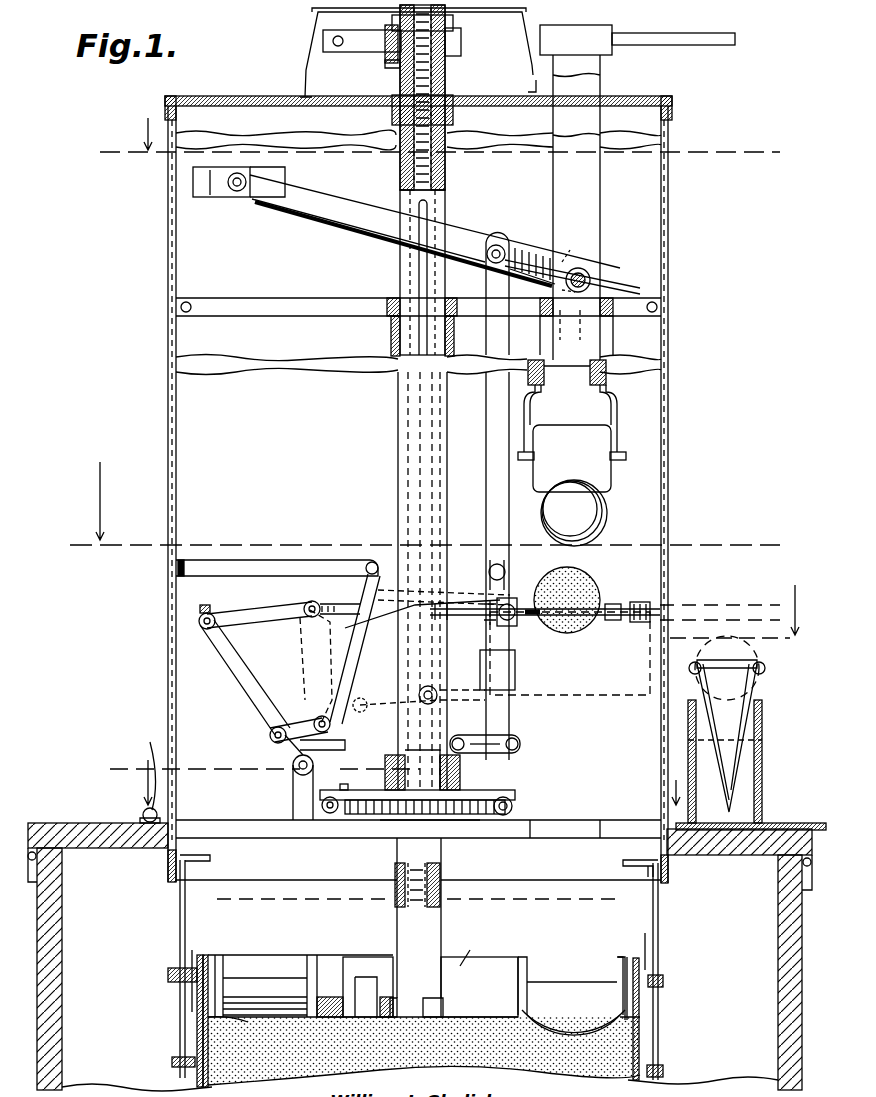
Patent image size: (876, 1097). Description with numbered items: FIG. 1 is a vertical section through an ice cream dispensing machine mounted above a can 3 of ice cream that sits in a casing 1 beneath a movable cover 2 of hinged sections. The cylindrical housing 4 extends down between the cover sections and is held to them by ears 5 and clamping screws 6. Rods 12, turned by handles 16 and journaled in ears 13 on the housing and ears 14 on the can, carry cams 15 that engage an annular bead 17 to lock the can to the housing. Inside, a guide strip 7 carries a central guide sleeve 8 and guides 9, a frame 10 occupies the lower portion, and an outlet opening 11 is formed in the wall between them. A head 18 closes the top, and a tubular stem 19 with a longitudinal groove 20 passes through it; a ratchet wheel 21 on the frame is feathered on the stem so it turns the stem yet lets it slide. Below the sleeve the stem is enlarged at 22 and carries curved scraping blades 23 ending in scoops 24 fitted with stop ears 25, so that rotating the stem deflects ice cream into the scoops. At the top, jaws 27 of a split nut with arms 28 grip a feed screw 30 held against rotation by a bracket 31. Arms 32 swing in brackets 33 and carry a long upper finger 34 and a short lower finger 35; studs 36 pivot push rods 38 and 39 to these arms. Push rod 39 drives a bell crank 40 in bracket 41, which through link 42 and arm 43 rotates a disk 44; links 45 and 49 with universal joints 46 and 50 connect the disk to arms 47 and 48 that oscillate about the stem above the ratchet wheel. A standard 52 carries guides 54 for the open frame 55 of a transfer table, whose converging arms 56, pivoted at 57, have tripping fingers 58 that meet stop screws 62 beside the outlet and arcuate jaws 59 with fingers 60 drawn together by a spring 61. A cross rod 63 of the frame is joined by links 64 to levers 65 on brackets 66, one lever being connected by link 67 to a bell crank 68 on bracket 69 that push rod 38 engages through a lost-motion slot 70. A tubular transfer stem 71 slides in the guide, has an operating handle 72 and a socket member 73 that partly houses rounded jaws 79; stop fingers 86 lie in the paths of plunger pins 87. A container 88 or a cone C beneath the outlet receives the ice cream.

The casing 1 is at (62, 1010).
The movable cover 2 is at (794, 842).
The can 3 is at (158, 1032).
The housing 4 is at (688, 366).
The ears 5 is at (392, 791).
The clamping screws 6 is at (147, 766).
The guide strip 7 is at (278, 300).
The guide sleeve 8 is at (398, 437).
The guides 9 is at (540, 352).
The frame 10 is at (240, 846).
The outlet opening 11 is at (680, 588).
The rods 12 is at (180, 932).
The ears 13 is at (192, 888).
The ears 14 is at (172, 1064).
The cam 15 is at (168, 975).
The handle 16 is at (210, 861).
The annular bead 17 is at (420, 964).
The head 18 is at (215, 100).
The tubular stem 19 is at (400, 272).
The longitudinal groove 20 is at (430, 205).
The ratchet wheel 21 is at (370, 814).
The enlarged portion 22 is at (430, 918).
The scraping blades 23 is at (345, 990).
The scoop 24 is at (270, 970).
The stop ears 25 is at (235, 940).
The jaws 27 is at (445, 42).
The arms 28 is at (356, 45).
The feed screw 30 is at (430, 86).
The bracket 31 is at (304, 76).
The arms 32 is at (322, 205).
The brackets 33 is at (222, 202).
The upper finger 34 is at (625, 270).
The lower finger 35 is at (540, 292).
The studs 36 is at (505, 228).
The push rod 38 is at (490, 412).
The push rod 39 is at (502, 705).
The bell crank 40 is at (455, 730).
The bracket 41 is at (470, 752).
The link 42 is at (445, 680).
The arm 43 is at (400, 712).
The disk 44 is at (390, 745).
The link 45 is at (585, 268).
The universal joints 46 is at (515, 806).
The arm 47 is at (515, 792).
The arm 48 is at (358, 775).
The link 49 is at (330, 815).
The universal joints 50 is at (340, 820).
The standard 52 is at (500, 680).
The guides 54 is at (348, 664).
The open frame 55 is at (326, 612).
The converging arms 56 is at (515, 600).
The pivot 57 is at (508, 626).
The tripping fingers 58 is at (555, 628).
The arcuate jaws 59 is at (600, 588).
The fingers 60 is at (613, 622).
The spring 61 is at (618, 605).
The stop screws 62 is at (636, 624).
The cross rod 63 is at (330, 748).
The links 64 is at (242, 614).
The levers 65 is at (232, 672).
The brackets 66 is at (293, 772).
The link 67 is at (265, 738).
The bell crank 68 is at (462, 580).
The bracket 69 is at (195, 565).
The slot 70 is at (520, 570).
The tubular elevating or transfer stem 71 is at (600, 68).
The operating handle 72 is at (672, 45).
The socket member 73 is at (600, 470).
The rounded jaws 79 is at (605, 520).
The stop fingers 86 is at (524, 425).
The pins 87 is at (518, 456).
The container 88 is at (768, 778).
The cone C is at (765, 690).